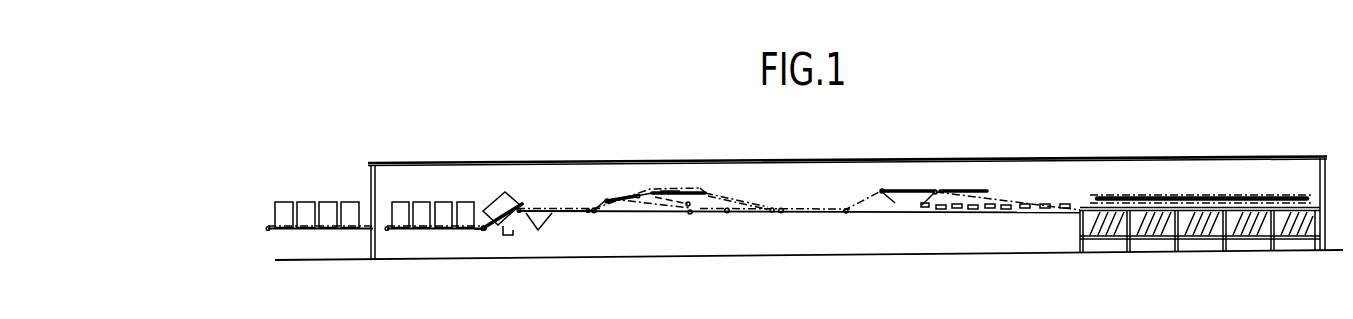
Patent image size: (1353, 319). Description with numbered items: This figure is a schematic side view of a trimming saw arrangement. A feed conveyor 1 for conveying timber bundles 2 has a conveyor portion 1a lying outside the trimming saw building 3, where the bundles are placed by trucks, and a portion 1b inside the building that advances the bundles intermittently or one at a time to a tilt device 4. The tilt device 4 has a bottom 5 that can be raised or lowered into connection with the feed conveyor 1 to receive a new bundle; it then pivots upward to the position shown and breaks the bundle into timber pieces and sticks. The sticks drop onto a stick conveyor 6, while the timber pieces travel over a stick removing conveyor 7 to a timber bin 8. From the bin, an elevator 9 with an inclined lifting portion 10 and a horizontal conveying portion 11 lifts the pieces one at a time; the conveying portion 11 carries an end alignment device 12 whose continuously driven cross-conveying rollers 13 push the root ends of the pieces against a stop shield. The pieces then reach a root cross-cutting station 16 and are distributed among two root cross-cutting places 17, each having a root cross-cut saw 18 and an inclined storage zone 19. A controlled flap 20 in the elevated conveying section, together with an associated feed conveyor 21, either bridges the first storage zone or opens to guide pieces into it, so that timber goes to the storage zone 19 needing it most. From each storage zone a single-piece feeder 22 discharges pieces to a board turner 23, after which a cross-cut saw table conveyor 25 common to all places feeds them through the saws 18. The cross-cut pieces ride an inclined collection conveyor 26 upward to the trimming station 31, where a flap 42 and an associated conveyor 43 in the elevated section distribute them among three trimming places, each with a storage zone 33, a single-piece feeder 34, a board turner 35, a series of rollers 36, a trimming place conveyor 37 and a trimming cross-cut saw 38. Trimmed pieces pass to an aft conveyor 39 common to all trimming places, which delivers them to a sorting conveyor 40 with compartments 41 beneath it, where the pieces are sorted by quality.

The conveyor portion 1a is at (287, 230).
The feed conveyor 1 is at (319, 242).
The conveyor portion 1b is at (400, 228).
The timber bundles 2 is at (328, 202).
The trimming saw building 3 is at (385, 162).
The tilt device 4 is at (500, 227).
The bottom 5 is at (486, 224).
The stick conveyor 6 is at (538, 215).
The stick removing conveyor 7 is at (528, 207).
The timber bin 8 is at (592, 207).
The elevator 9 is at (620, 187).
The inclined lifting portion 10 is at (603, 186).
The horizontal conveying portion 11 is at (653, 190).
The end alignment device 12 is at (630, 194).
The cross-conveying rollers 13 is at (605, 206).
The root cross-cutting station 16 is at (703, 180).
The root cross-cutting places 17 is at (778, 201).
The root cross-cut saw 18 is at (726, 215).
The storage zone 19 is at (700, 200).
The flap 20 is at (656, 191).
The feed conveyor 21 is at (660, 193).
The single-piece feeder 22 is at (750, 200).
The board turner 23 is at (758, 200).
The cross-cut saw table conveyor 25 is at (745, 213).
The inclined collection conveyor 26 is at (845, 214).
The trimming station 31 is at (999, 156).
The storage zone 33 is at (892, 195).
The single-piece feeder 34 is at (895, 196).
The board turner 35 is at (928, 203).
The rollers 36 is at (922, 208).
The trimming place conveyor 37 is at (950, 213).
The trimming cross-cut saw 38 is at (972, 212).
The aft conveyor 39 is at (1050, 213).
The sorting conveyor 40 is at (1198, 196).
The compartments 41 is at (1200, 228).
The flap 42 is at (880, 189).
The conveyor 43 is at (908, 189).